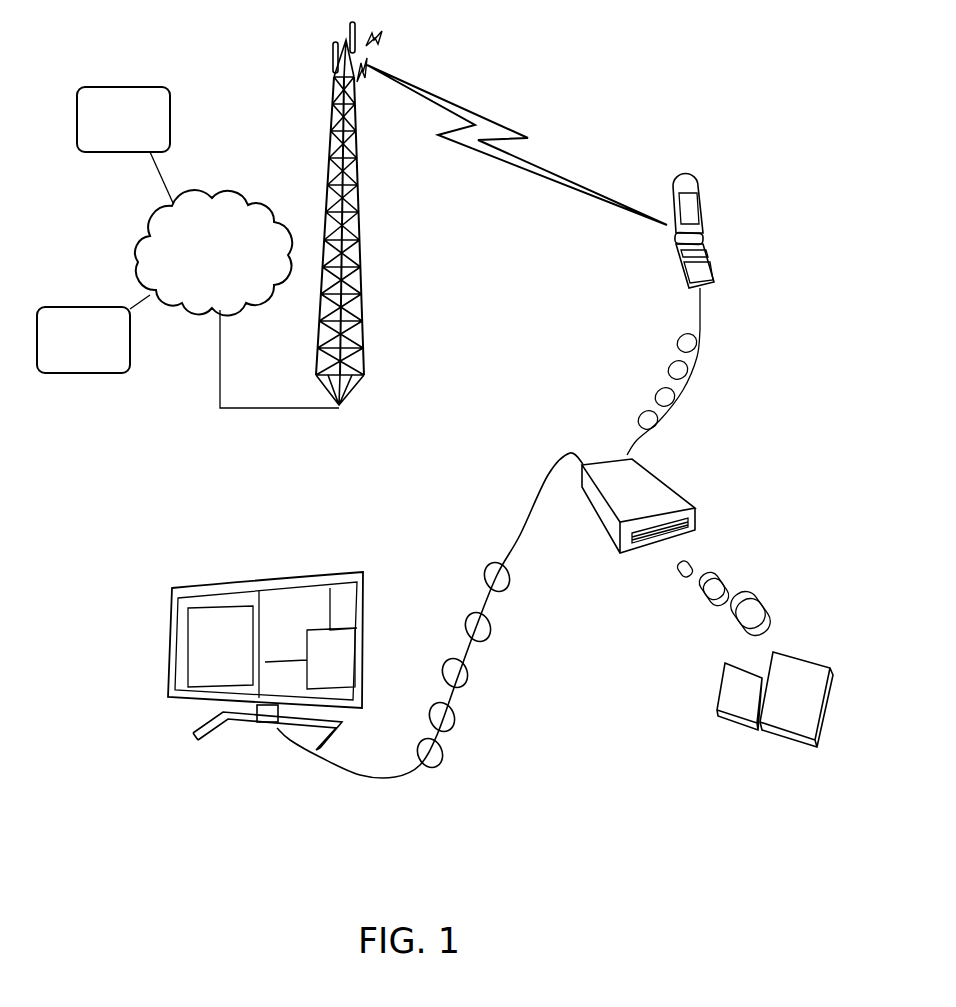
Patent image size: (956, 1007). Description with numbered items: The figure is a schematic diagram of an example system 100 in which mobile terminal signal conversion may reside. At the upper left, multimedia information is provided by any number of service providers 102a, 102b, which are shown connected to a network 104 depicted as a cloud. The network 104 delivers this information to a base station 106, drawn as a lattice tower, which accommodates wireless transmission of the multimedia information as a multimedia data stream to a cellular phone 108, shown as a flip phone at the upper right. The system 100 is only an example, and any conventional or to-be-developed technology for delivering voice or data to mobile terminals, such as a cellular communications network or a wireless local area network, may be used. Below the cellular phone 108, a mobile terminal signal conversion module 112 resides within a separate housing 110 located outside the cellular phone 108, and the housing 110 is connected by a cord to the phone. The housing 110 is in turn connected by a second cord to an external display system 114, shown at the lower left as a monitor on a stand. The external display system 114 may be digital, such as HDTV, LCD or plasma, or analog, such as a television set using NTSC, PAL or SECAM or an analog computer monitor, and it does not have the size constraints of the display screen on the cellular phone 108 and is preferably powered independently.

The system 100 is at (103, 858).
The service provider 102a is at (58, 308).
The service provider 102b is at (122, 90).
The network 104 is at (233, 206).
The base station 106 is at (360, 362).
The cellular phone 108 is at (699, 224).
The separate housing 110 is at (663, 495).
The mobile terminal signal conversion module 112 is at (798, 668).
The external display system 114 is at (290, 583).